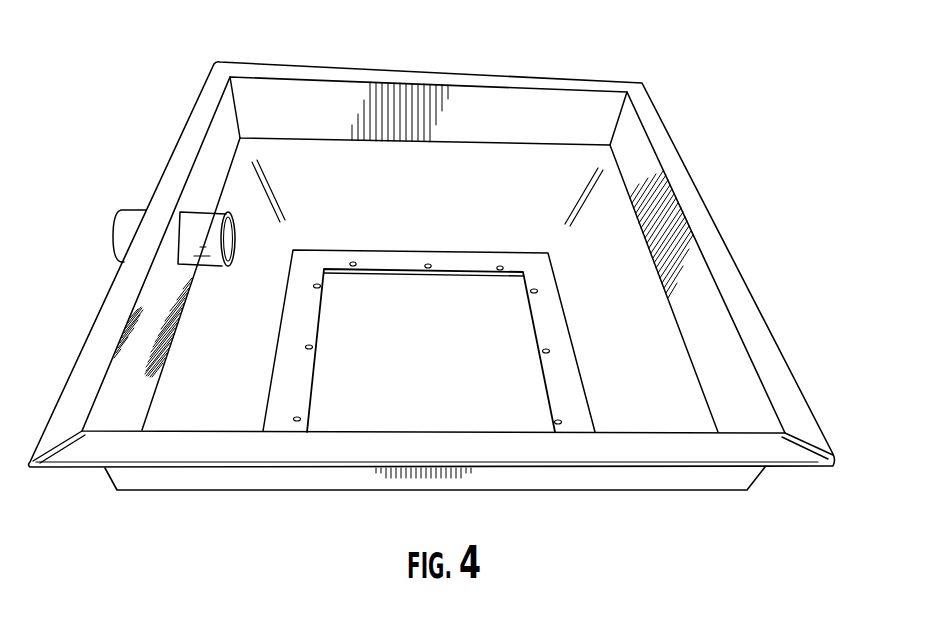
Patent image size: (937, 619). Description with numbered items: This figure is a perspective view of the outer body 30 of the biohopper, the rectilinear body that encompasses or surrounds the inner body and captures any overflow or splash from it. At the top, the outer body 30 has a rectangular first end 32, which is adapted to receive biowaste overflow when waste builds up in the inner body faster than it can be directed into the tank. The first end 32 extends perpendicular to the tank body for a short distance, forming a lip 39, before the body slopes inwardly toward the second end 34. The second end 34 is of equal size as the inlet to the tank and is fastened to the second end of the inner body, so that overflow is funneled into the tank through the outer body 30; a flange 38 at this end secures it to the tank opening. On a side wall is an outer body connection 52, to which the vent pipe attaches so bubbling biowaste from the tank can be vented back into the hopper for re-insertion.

The outer body 30 is at (668, 92).
The first end 32 is at (668, 178).
The second end 34 is at (545, 375).
The flange 38 is at (565, 392).
The lip 39 is at (130, 372).
The outer body connection 52 is at (128, 228).